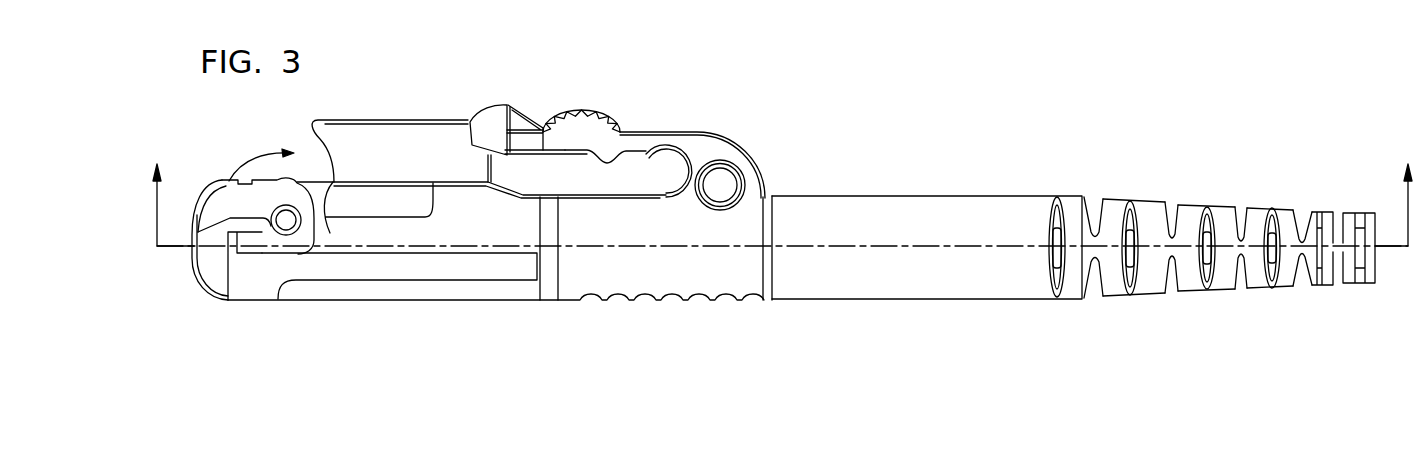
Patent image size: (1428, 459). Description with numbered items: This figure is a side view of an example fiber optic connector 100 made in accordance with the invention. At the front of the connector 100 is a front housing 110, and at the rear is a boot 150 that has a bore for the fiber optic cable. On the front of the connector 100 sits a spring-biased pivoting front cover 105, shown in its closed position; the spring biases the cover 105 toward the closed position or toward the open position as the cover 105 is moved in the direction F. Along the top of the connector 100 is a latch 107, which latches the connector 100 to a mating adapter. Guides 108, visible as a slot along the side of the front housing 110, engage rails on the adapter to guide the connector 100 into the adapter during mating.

The connector 100 is at (781, 184).
The front cover 105 is at (214, 203).
The latch 107 is at (580, 127).
The guides 108 is at (410, 265).
The front housing 110 is at (608, 270).
The boot 150 is at (875, 133).